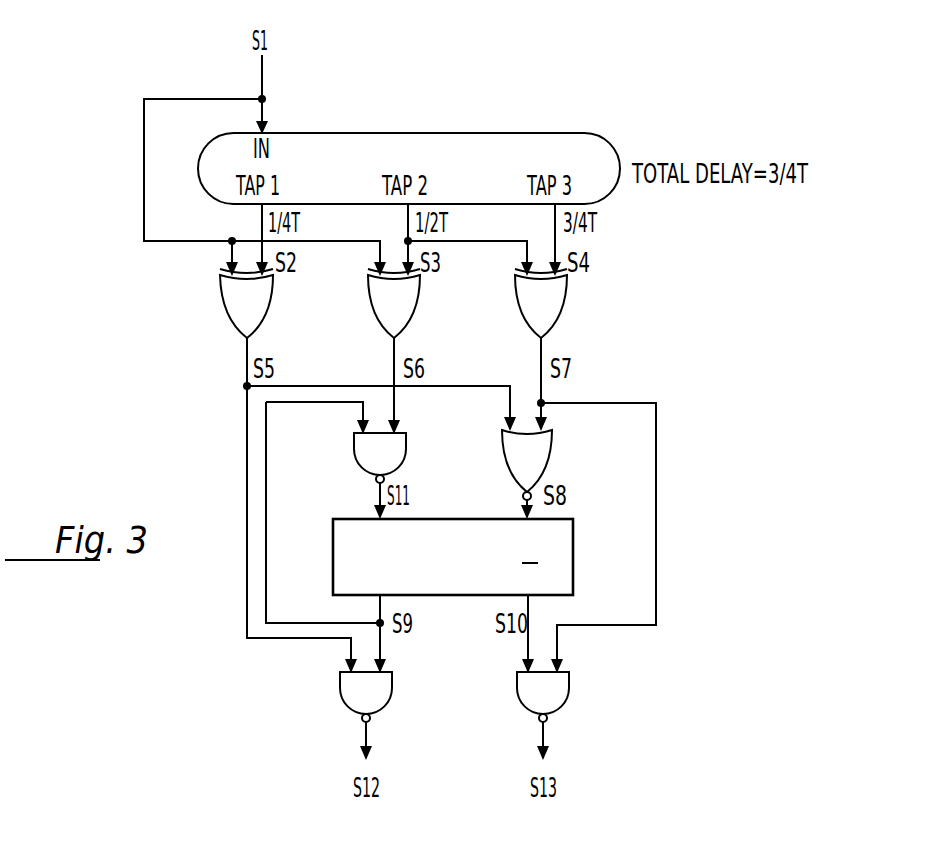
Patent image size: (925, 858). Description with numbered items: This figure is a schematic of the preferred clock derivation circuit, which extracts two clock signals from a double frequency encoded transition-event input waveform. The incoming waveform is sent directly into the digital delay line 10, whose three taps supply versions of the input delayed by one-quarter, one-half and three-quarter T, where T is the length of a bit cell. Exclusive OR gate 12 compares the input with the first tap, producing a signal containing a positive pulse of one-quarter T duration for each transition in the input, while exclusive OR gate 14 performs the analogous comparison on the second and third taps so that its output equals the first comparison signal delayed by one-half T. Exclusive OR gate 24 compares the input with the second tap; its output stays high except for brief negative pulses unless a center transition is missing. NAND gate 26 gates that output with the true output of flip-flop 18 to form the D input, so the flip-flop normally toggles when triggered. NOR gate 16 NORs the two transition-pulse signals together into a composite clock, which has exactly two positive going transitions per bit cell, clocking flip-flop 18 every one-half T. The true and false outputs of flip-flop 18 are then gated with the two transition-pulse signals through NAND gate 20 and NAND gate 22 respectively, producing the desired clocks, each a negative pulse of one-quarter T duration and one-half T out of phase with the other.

The digital delay line 10 is at (532, 138).
The exclusive OR gate 12 is at (263, 317).
The exclusive OR gate 24 is at (411, 317).
The exclusive OR gate 14 is at (556, 318).
The NAND gate 26 is at (397, 455).
The NOR gate 16 is at (540, 462).
The flip-flop 18 is at (567, 573).
The NAND gate 20 is at (380, 690).
The NAND gate 22 is at (557, 690).